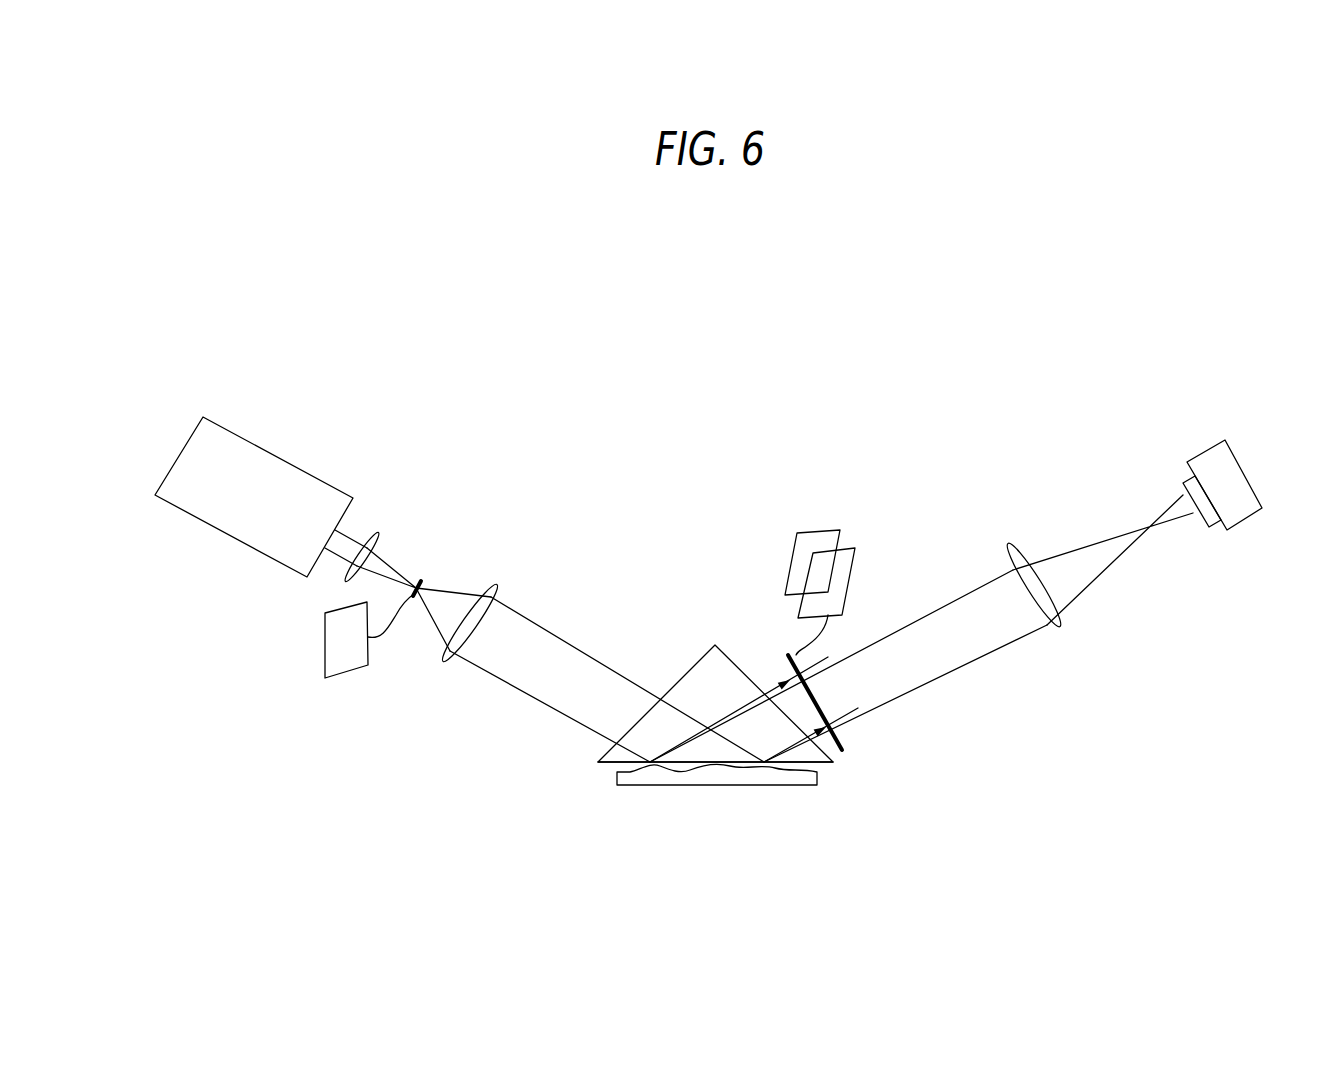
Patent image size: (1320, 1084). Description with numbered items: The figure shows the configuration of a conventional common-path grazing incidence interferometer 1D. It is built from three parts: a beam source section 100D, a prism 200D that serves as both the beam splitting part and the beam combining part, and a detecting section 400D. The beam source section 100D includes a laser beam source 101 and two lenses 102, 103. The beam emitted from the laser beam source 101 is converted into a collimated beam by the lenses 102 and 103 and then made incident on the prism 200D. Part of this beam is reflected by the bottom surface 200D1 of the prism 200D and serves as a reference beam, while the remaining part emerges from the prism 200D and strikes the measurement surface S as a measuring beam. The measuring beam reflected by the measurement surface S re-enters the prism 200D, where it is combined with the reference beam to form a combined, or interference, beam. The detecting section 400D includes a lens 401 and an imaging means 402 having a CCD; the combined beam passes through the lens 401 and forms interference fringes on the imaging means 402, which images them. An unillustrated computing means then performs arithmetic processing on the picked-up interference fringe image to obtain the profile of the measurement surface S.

The grazing incidence interferometer 1D is at (979, 298).
The beam source section 100D is at (483, 402).
The laser beam source 101 is at (245, 440).
The lens 102 is at (370, 533).
The lens 103 is at (492, 583).
The prism 200D is at (694, 658).
The bottom surface 200D1 is at (612, 764).
The measurement surface S is at (688, 766).
The detecting section 400D is at (1076, 452).
The lens 401 is at (1008, 543).
The imaging means 402 is at (1202, 452).